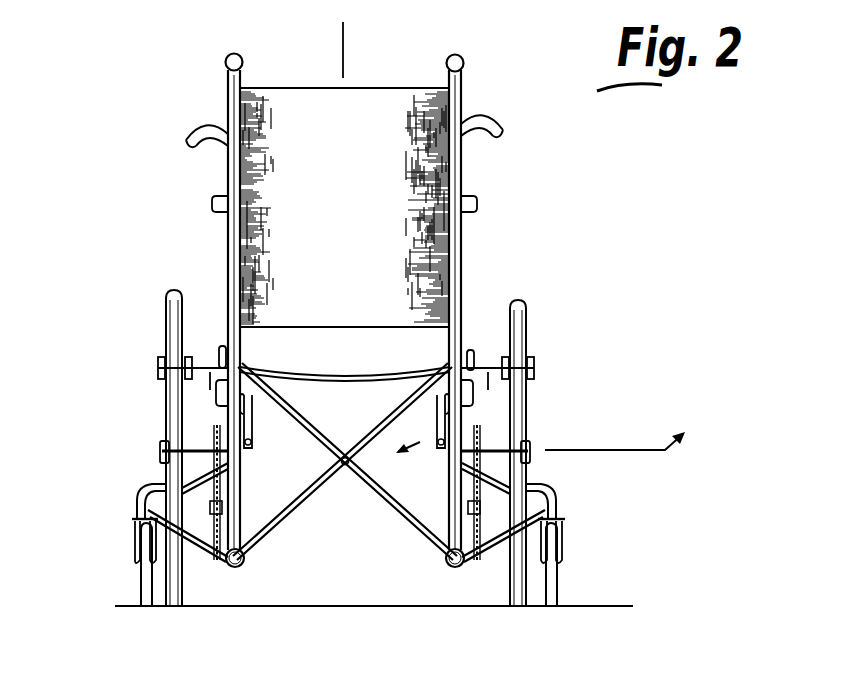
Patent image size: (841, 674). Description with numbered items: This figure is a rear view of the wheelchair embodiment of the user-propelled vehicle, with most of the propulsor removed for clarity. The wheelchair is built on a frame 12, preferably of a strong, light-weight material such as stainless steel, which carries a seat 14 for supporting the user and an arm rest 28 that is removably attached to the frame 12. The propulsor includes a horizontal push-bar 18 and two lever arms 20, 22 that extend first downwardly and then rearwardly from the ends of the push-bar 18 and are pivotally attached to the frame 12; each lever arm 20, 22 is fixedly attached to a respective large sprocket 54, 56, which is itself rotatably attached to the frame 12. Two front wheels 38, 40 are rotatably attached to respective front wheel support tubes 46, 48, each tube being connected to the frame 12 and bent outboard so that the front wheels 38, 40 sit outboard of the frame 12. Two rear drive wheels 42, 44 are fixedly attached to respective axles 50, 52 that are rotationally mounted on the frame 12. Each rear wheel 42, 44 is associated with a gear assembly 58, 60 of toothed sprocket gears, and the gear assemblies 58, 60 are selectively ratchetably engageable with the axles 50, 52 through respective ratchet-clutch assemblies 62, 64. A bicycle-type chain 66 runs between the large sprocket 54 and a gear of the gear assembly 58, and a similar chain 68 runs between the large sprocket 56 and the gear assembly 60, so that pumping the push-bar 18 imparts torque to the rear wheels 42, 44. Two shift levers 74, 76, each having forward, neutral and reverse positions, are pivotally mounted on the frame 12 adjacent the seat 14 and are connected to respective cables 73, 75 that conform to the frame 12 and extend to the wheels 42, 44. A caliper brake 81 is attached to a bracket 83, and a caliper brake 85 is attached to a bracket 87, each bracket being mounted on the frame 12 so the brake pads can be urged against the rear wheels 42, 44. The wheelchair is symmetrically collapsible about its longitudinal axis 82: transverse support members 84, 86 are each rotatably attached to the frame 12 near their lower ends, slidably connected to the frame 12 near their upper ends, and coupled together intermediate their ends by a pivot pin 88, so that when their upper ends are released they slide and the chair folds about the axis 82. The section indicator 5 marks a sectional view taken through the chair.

The section line 5- 5 is at (551, 425).
The frame 12 is at (228, 152).
The seat 14 is at (310, 372).
The horizontal push-bar 18 is at (462, 124).
The lever arm 20 is at (410, 520).
The lever arm 22 is at (270, 520).
The arm rest 28 is at (478, 200).
The front wheel 38 is at (560, 590).
The front wheel 40 is at (142, 596).
The rear drive wheel 42 is at (534, 378).
The rear drive wheel 44 is at (175, 380).
The front wheel support tube 46 is at (560, 498).
The front wheel support tube 48 is at (133, 512).
The axle 50 is at (500, 446).
The axle 52 is at (160, 450).
The large sprocket 54 is at (492, 560).
The large sprocket 56 is at (203, 548).
The gear assembly 58 is at (486, 424).
The gear assembly 60 is at (215, 428).
The ratchet-clutch assembly 62 is at (528, 472).
The ratchet-clutch assembly 64 is at (152, 482).
The bicycle-type chain 66 is at (480, 556).
The bicycle-type chain 68 is at (217, 562).
The cable 73 is at (447, 453).
The shift lever 74 is at (470, 350).
The cable 75 is at (258, 438).
The shift lever 76 is at (222, 345).
The caliper brake 81 is at (533, 366).
The longitudinal axis 82 is at (346, 36).
The bracket 83 is at (488, 366).
The transverse support member 84 is at (250, 556).
The caliper brake 85 is at (160, 366).
The transverse support member 86 is at (440, 556).
The bracket 87 is at (212, 366).
The pivot pin 88 is at (345, 457).